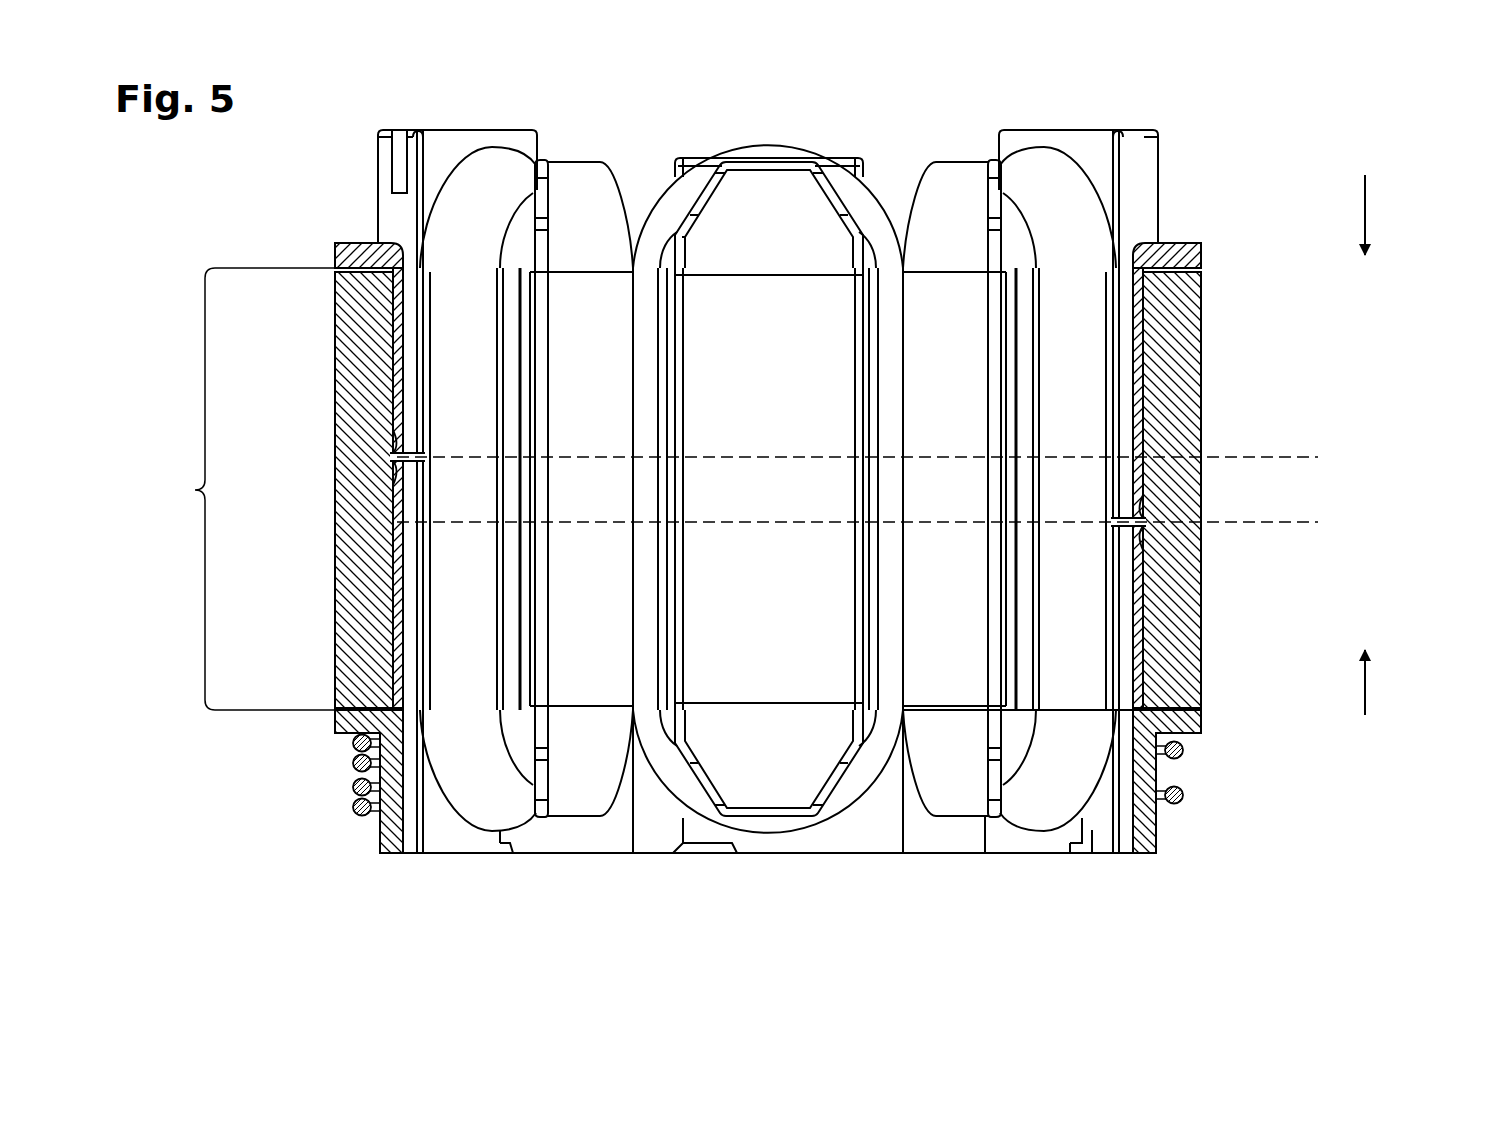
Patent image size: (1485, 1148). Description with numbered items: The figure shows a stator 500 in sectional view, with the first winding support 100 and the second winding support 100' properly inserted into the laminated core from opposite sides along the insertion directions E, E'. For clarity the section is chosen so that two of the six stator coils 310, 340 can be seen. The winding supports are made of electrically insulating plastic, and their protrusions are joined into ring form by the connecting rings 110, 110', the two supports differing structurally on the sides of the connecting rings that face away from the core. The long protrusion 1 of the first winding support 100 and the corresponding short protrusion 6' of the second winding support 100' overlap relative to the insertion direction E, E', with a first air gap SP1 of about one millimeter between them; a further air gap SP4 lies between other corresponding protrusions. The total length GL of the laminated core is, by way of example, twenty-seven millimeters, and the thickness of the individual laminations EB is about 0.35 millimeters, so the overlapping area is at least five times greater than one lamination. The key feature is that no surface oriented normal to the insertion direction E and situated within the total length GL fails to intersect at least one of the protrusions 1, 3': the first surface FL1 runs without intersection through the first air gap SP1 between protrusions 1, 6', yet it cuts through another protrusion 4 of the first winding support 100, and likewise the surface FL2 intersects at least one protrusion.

The stator 500 is at (260, 771).
The protrusion of the first winding support 4 is at (395, 222).
The stator coil 340 is at (497, 177).
The stator coil 310 is at (1039, 177).
The first winding support 100 is at (1100, 153).
The connecting ring 110 is at (1196, 215).
The protrusion of the first winding support 1 is at (1133, 440).
The surface FL1 is at (1318, 457).
The surface FL2 is at (1318, 522).
The total length of the laminated core GL is at (241, 489).
The air gap SP4 is at (387, 457).
The air gap SP1 is at (1149, 525).
The protrusion of the second winding support 3' is at (337, 562).
The protrusion of the second winding support 6' is at (1212, 490).
The insertion direction E is at (1404, 215).
The insertion direction E' is at (1407, 682).
The thickness of the individual laminations EB is at (768, 690).
The second winding support 100' is at (1002, 824).
The connecting ring 110' is at (1207, 824).